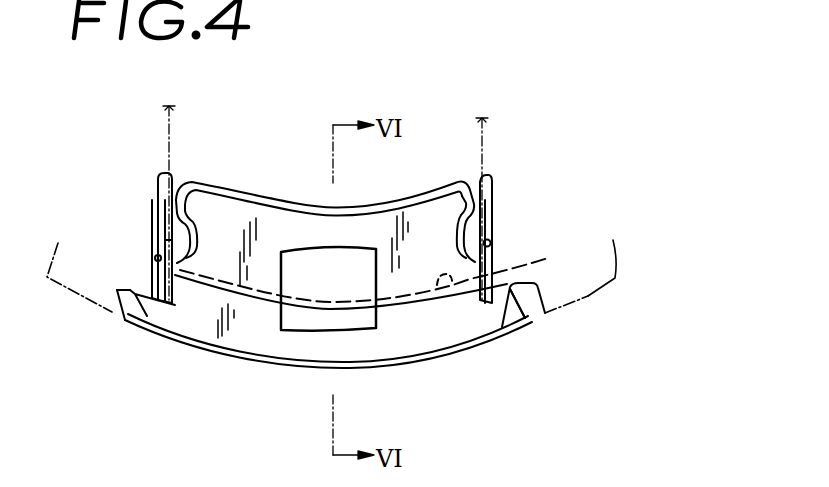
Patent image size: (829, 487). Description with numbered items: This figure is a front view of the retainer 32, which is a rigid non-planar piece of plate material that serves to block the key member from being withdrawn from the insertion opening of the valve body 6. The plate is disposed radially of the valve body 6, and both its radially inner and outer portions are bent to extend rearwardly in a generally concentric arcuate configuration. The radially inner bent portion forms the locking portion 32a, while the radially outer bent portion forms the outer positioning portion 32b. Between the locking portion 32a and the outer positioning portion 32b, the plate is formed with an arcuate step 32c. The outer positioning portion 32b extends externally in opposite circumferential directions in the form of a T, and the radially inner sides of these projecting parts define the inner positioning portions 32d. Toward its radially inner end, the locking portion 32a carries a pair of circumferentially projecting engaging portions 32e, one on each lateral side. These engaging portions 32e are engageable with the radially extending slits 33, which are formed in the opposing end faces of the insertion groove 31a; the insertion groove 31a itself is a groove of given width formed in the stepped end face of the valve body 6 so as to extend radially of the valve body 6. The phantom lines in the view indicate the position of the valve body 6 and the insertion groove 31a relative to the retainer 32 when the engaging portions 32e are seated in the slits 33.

The valve body 6 is at (586, 295).
The insertion groove 31a is at (480, 138).
The retainer 32 is at (426, 357).
The locking portion 32a is at (238, 191).
The outer positioning portion 32b is at (242, 364).
The arcuate step 32c is at (376, 269).
The inner positioning portions 32d is at (148, 290).
The engaging portions 32e is at (160, 200).
The slits 33 is at (157, 256).